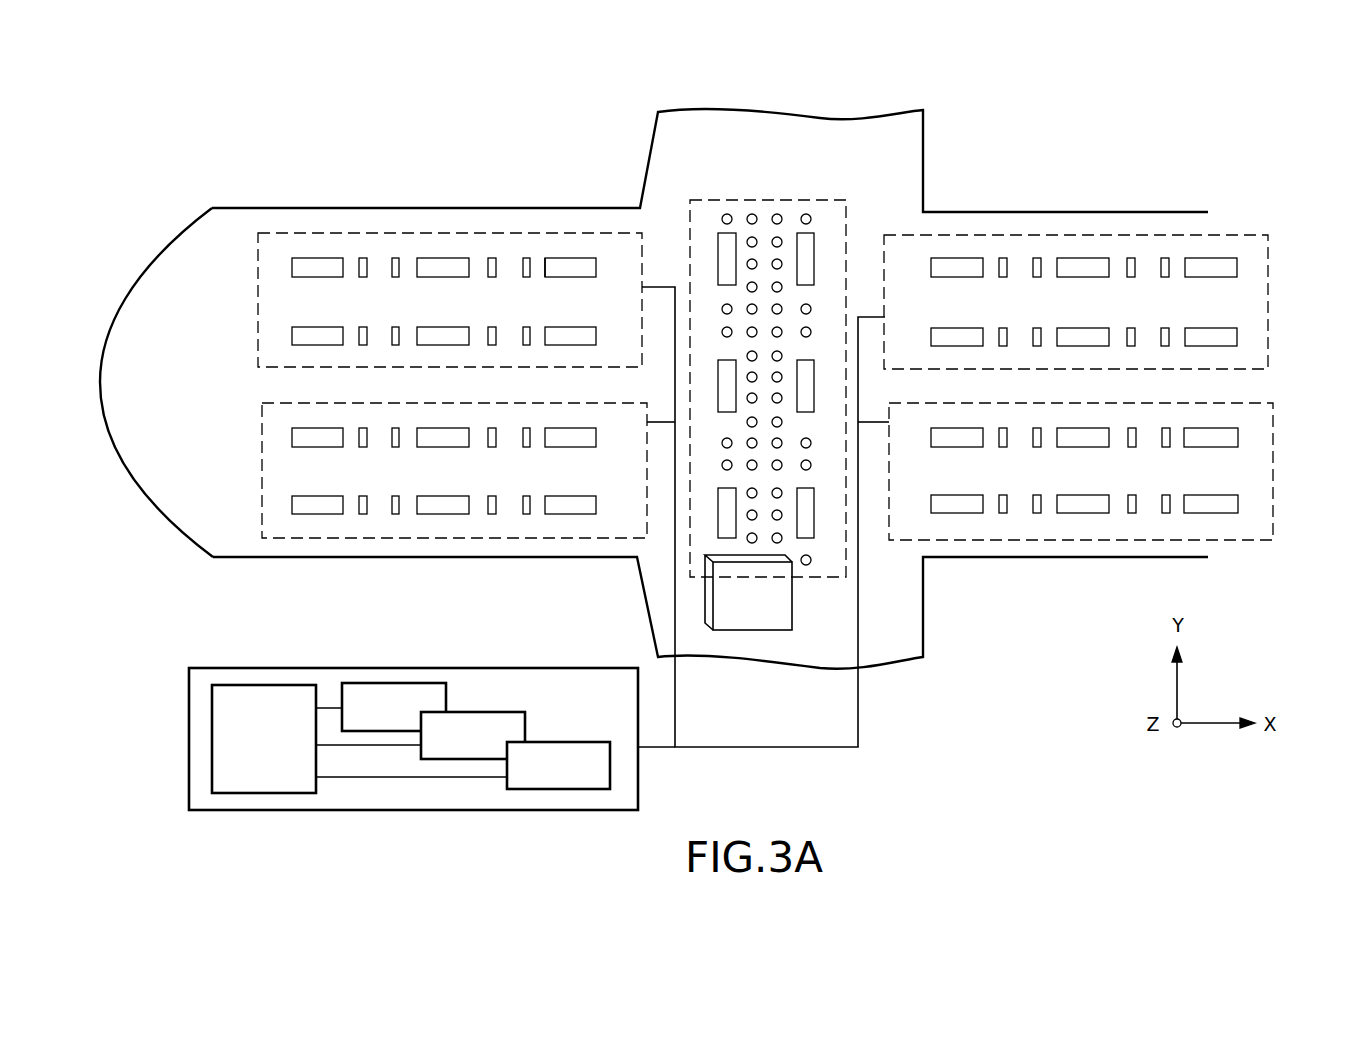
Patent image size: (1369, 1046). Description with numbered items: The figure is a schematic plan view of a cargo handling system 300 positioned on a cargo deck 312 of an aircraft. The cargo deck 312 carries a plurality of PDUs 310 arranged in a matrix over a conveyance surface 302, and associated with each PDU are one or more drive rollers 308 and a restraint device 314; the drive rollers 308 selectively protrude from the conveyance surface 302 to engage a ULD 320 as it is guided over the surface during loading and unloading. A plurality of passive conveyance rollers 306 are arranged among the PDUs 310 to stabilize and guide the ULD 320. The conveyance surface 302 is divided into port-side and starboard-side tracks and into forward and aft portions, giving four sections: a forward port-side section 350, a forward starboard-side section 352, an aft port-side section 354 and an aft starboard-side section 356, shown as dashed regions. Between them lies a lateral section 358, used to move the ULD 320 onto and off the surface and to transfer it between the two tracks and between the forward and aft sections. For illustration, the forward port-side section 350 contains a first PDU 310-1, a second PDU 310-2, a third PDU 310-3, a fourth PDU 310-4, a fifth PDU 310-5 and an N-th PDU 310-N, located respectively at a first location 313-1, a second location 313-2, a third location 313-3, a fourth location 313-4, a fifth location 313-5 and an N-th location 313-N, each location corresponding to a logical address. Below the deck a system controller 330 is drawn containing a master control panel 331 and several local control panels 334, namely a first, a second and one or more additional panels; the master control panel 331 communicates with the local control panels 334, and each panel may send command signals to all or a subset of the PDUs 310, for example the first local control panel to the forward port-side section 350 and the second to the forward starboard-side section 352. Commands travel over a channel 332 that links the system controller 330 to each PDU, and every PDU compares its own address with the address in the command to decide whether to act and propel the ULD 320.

The cargo handling system 300 is at (238, 122).
The conveyance surface 302 is at (942, 315).
The conveyance rollers 306 is at (1163, 265).
The drive rollers 308 is at (593, 263).
The PDUs 310 is at (353, 208).
The cargo deck 312 is at (507, 267).
The restraint device 314 is at (547, 263).
The ULD 320 is at (732, 620).
The system controller 330 is at (189, 710).
The master control panel 331 is at (278, 793).
The channel 332 is at (825, 747).
The local control panels 334 is at (447, 705).
The forward port-side section 350 is at (262, 470).
The forward starboard-side section 352 is at (262, 320).
The aft port-side section 354 is at (1273, 455).
The aft starboard-side section 356 is at (1268, 300).
The lateral section 358 is at (688, 200).
The first PDU 310-1 is at (310, 428).
The second PDU 310-2 is at (435, 428).
The third PDU 310-3 is at (550, 428).
The fourth PDU 310-4 is at (340, 515).
The fifth PDU 310-5 is at (466, 515).
The N-th PDU 310-N is at (576, 515).
The first location 313-1 is at (362, 458).
The second location 313-2 is at (490, 458).
The third location 313-3 is at (590, 420).
The fourth location 313-4 is at (362, 525).
The fifth location 313-5 is at (490, 525).
The N-th location 313-N is at (605, 494).